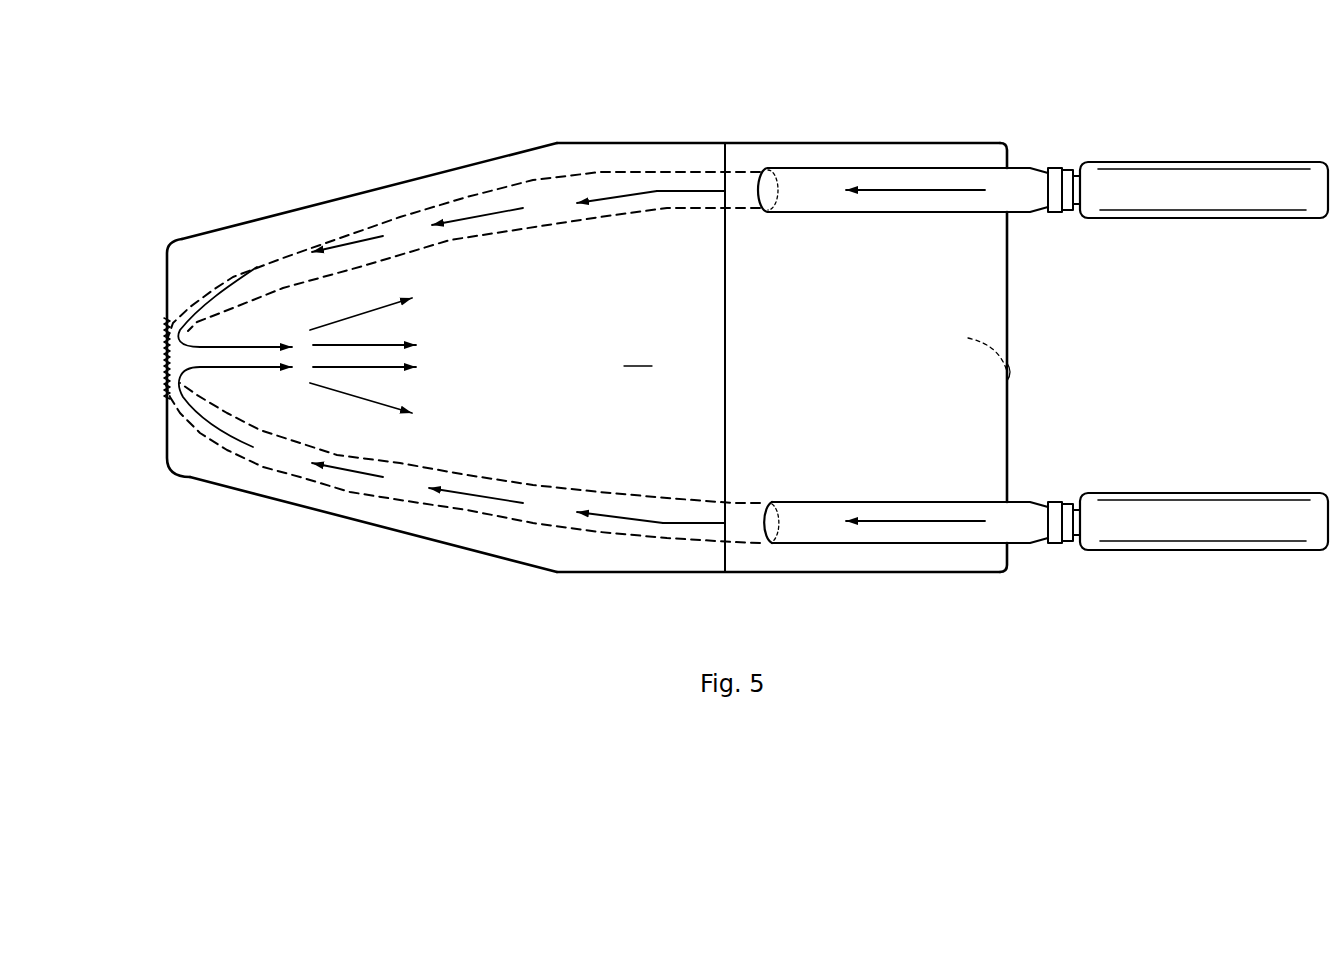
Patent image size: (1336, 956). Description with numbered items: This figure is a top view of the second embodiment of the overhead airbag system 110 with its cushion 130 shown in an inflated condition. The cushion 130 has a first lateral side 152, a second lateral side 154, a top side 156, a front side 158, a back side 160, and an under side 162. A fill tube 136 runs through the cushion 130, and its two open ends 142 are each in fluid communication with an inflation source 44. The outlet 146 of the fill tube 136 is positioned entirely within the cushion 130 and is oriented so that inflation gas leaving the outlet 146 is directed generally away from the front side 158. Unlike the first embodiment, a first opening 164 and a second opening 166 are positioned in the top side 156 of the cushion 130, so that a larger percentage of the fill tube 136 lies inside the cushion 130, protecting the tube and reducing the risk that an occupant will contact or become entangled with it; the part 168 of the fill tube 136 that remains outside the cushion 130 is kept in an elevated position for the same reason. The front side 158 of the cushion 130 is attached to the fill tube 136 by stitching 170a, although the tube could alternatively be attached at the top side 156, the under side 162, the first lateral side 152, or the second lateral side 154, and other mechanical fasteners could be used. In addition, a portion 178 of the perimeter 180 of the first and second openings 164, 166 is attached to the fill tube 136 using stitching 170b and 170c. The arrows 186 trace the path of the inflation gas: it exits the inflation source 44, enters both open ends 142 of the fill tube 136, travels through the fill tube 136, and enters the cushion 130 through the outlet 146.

The inflation source 44 is at (1193, 172).
The overhead airbag system 110 is at (590, 359).
The cushion 130 is at (638, 355).
The fill tube 136 is at (293, 245).
The open ends 142 is at (1068, 168).
The outlet 146 is at (197, 345).
The first lateral side 152 is at (610, 573).
The second lateral side 154 is at (610, 141).
The top side 156 is at (990, 302).
The front side 158 is at (166, 277).
The back side 160 is at (1010, 272).
The under side 162 is at (1007, 384).
The first opening 164 is at (772, 503).
The second opening 166 is at (766, 213).
The part of the fill tube outside the cushion 168 is at (887, 214).
The stitching 170a is at (162, 346).
The stitching 170b is at (757, 188).
The stitching 170c is at (760, 530).
The portion of the perimeter 178 is at (758, 195).
The perimeter 180 is at (767, 169).
The arrows 186 is at (500, 218).